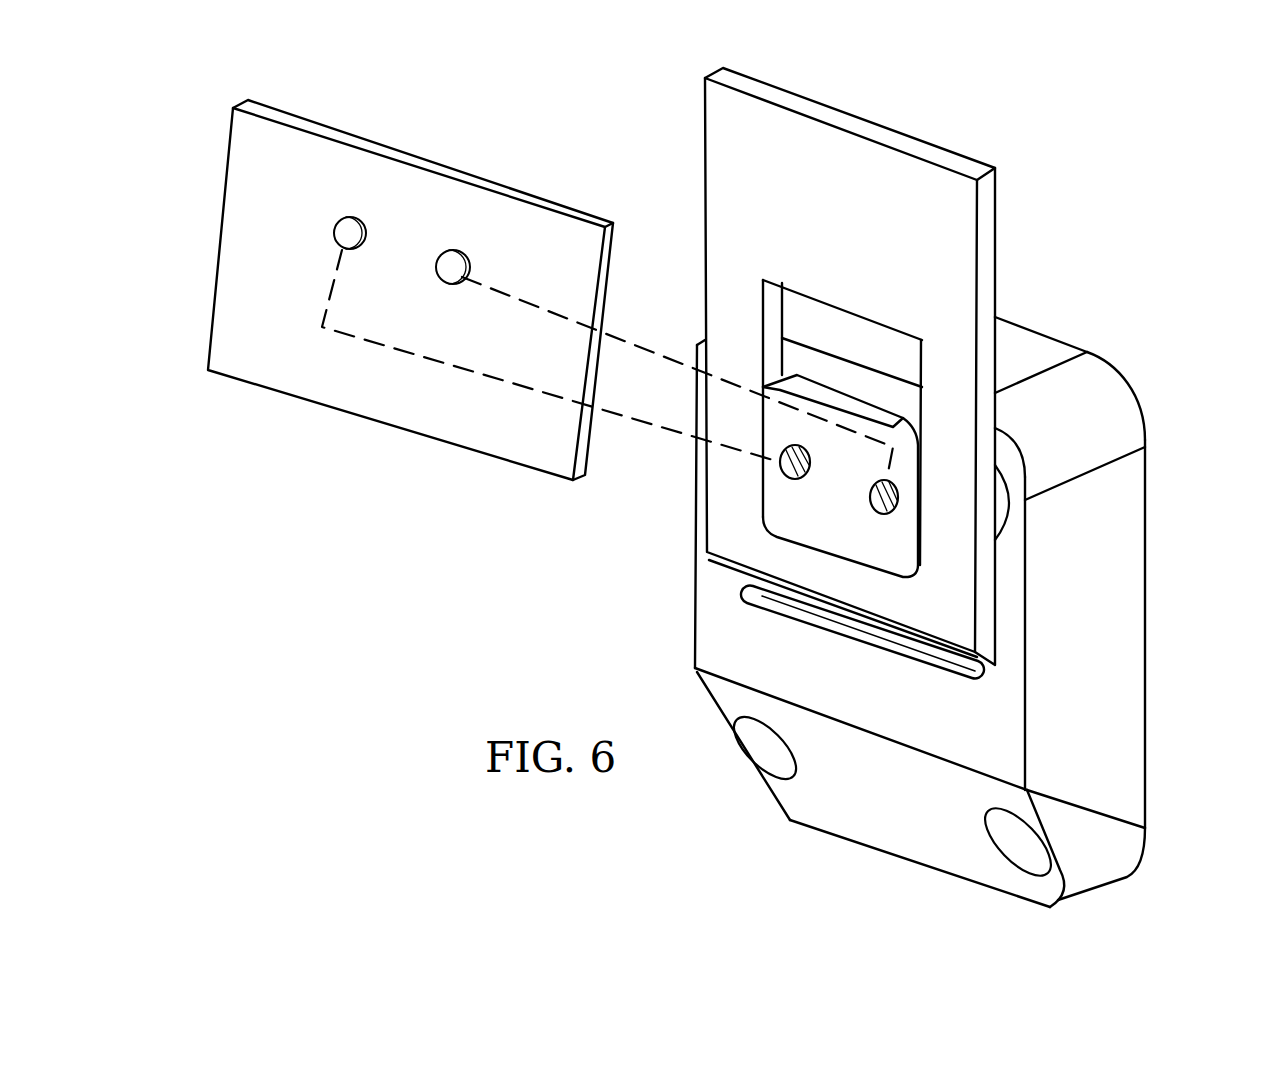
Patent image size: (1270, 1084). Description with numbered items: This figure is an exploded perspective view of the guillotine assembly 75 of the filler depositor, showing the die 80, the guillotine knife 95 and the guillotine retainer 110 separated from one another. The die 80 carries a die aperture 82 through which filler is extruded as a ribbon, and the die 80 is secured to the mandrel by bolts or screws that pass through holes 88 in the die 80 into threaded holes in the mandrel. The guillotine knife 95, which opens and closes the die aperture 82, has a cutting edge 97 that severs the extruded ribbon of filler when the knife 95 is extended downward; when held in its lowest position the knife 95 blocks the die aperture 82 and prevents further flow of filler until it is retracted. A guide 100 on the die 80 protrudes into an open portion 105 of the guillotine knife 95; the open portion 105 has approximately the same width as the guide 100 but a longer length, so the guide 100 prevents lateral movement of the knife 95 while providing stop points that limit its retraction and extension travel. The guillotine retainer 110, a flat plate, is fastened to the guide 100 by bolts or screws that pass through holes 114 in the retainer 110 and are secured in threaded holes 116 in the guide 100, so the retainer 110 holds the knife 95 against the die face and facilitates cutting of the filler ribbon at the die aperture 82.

The guillotine assembly 75 is at (598, 526).
The die 80 is at (693, 638).
The die aperture 82 is at (763, 608).
The holes 88 is at (763, 755).
The guillotine knife 95 is at (703, 170).
The cutting edge 97 is at (855, 430).
The guide 100 is at (893, 417).
The open portion 105 is at (766, 298).
The guillotine retainer 110 is at (268, 388).
The holes 114 is at (337, 233).
The threaded holes 116 is at (787, 478).